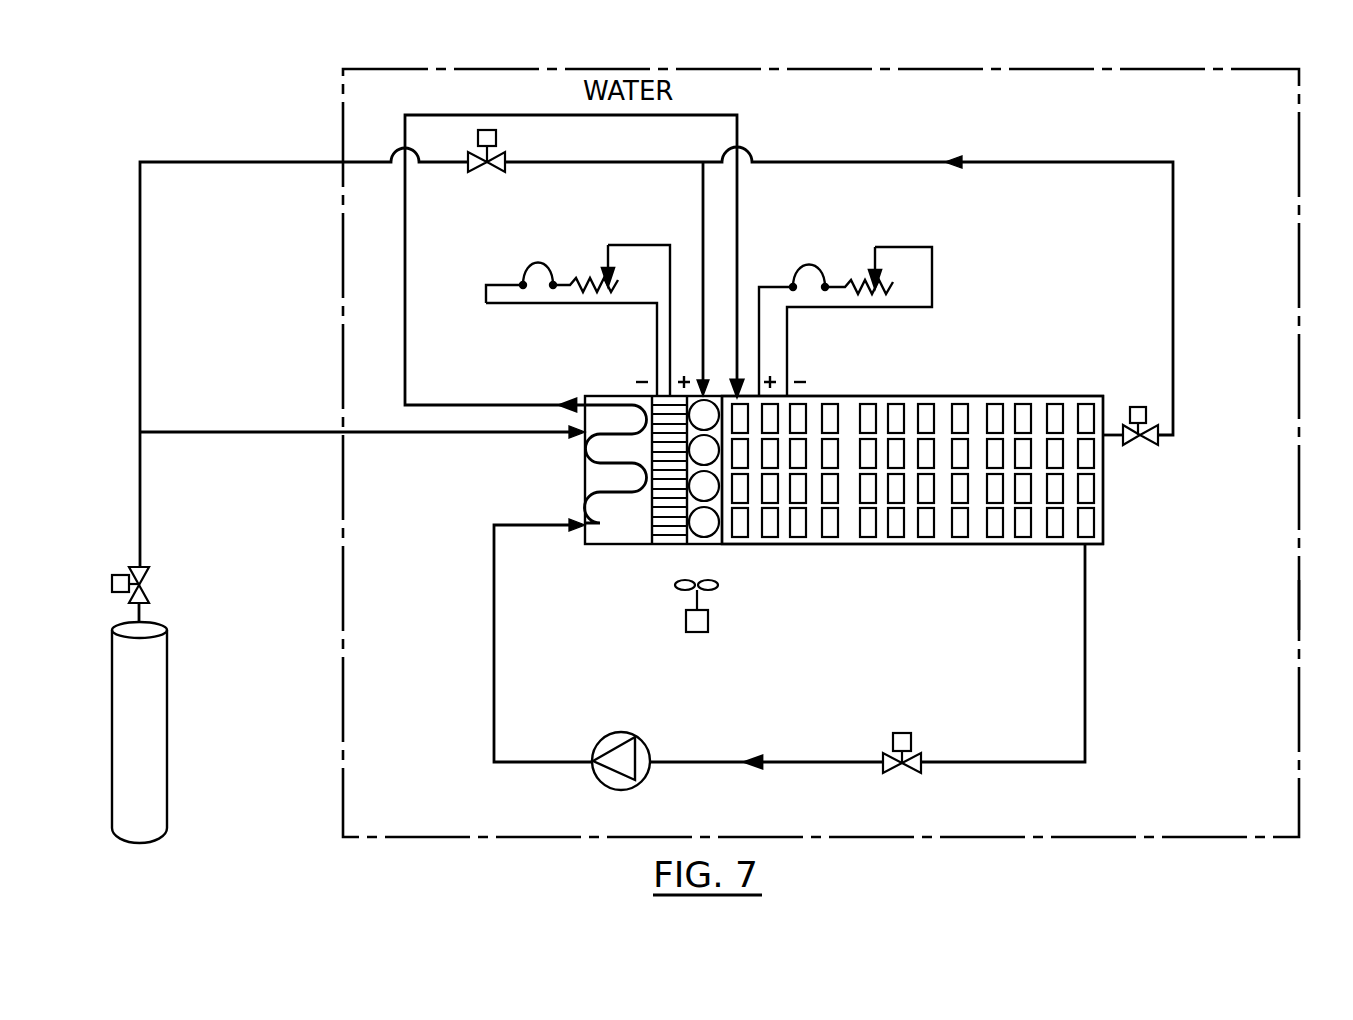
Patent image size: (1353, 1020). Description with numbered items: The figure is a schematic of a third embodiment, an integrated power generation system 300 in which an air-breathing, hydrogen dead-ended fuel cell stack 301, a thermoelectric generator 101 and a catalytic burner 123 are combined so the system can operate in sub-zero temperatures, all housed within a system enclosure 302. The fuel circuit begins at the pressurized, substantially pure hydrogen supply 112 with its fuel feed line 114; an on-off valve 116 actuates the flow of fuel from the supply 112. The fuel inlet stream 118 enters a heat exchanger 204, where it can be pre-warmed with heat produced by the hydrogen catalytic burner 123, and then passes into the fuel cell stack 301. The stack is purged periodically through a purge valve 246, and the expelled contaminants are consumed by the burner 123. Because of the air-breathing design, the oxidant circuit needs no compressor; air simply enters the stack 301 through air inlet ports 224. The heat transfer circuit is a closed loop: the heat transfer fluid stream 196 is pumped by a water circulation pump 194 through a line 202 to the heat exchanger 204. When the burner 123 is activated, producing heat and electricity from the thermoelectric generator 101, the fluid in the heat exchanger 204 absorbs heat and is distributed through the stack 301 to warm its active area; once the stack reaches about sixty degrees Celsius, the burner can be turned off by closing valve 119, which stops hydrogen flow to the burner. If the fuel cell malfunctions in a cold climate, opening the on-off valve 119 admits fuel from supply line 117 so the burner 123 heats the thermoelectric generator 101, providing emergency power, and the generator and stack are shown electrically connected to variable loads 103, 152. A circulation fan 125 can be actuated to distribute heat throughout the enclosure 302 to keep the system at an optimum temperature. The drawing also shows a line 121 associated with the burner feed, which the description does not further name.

The thermoelectric generator 101 is at (667, 548).
The variable load 103 is at (580, 288).
The pressurized hydrogen supply 112 is at (128, 675).
The fuel feed line 114 is at (140, 450).
The on-off valve 116 is at (114, 576).
The supply line 117 is at (140, 248).
The fuel inlet stream 118 is at (300, 430).
The on-off valve 119 is at (496, 137).
The water line 121 is at (670, 163).
The catalytic burner 123 is at (710, 548).
The circulation fan 125 is at (710, 625).
The variable load 152 is at (857, 285).
The water circulation pump 194 is at (621, 732).
The heat transfer fluid stream 196 is at (1086, 660).
The line 202 is at (494, 562).
The heat exchanger 204 is at (588, 468).
The air inlet ports 224 is at (1055, 410).
The purge valve 246 is at (1140, 445).
The system 300 is at (1143, 69).
The fuel cell stack 301 is at (905, 396).
The system enclosure 302 is at (1297, 605).